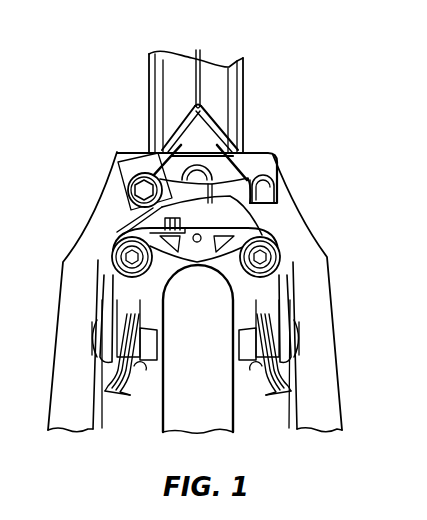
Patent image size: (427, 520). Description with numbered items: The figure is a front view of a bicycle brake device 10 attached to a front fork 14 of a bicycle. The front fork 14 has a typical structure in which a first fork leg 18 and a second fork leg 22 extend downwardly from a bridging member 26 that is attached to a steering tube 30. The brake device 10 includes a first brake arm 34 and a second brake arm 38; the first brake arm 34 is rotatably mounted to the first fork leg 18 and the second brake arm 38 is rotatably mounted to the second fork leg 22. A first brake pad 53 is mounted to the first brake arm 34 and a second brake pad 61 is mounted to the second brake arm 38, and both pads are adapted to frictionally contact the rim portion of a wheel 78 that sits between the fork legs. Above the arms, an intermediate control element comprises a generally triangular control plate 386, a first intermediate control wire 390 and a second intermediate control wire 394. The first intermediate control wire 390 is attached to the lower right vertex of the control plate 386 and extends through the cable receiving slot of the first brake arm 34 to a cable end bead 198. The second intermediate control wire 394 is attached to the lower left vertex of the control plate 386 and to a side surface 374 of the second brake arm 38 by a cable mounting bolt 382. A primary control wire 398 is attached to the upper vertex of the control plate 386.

The bicycle brake device 10 is at (223, 309).
The front fork 14 is at (209, 292).
The first fork leg 18 is at (80, 251).
The second fork leg 22 is at (325, 282).
The bridging member 26 is at (195, 173).
The steering tube 30 is at (157, 70).
The first brake arm 34 is at (87, 302).
The second brake arm 38 is at (310, 307).
The first brake pad 53 is at (125, 400).
The second brake pad 61 is at (270, 403).
The wheel 78 is at (208, 378).
The cable end bead 198 is at (268, 188).
The side surface 374 is at (128, 178).
The cable mounting bolt 382 is at (130, 192).
The control plate 386 is at (202, 128).
The first intermediate control wire 390 is at (248, 151).
The second intermediate control wire 394 is at (150, 158).
The primary control wire 398 is at (197, 50).